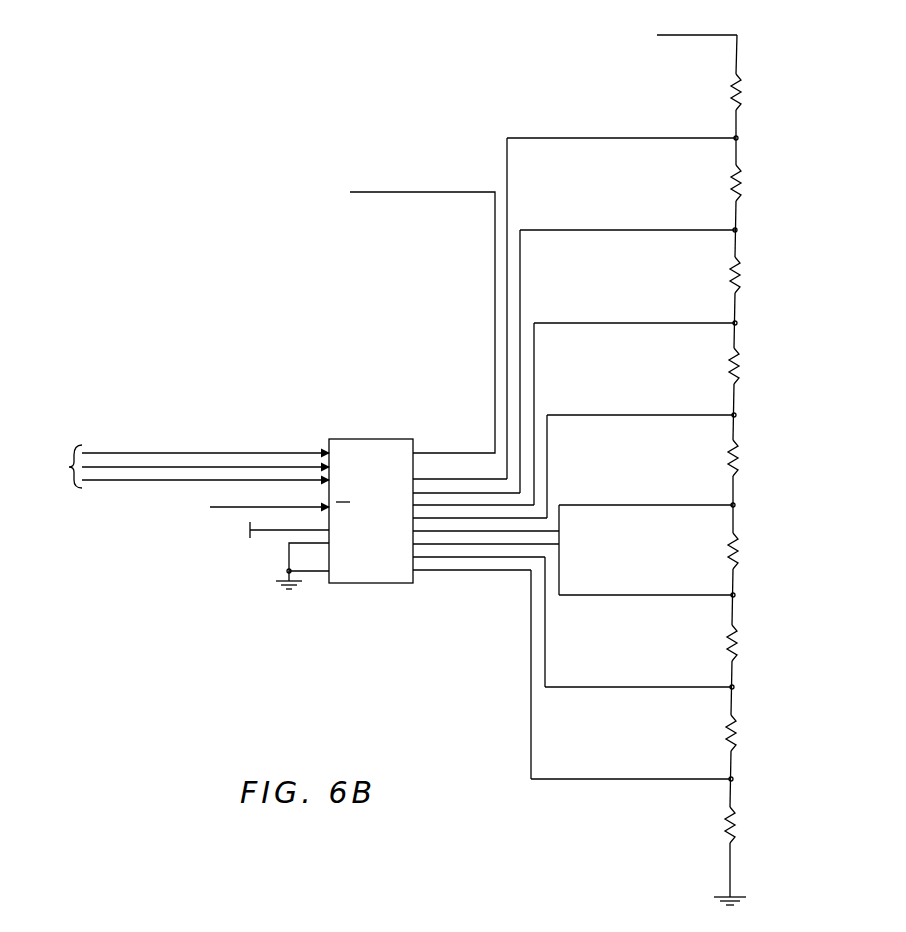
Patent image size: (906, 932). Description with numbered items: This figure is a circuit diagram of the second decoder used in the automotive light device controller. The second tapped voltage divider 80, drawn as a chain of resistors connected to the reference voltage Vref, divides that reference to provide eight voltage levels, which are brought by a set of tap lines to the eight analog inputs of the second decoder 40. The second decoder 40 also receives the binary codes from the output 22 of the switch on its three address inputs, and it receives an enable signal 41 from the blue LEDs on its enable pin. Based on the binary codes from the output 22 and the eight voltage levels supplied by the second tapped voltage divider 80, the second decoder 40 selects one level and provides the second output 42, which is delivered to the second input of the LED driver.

The output of the switch 22 is at (183, 464).
The second decoder 40 is at (378, 403).
The enable signal 41 is at (248, 513).
The second output 42 is at (417, 309).
The second tapped voltage divider 80 is at (648, 83).